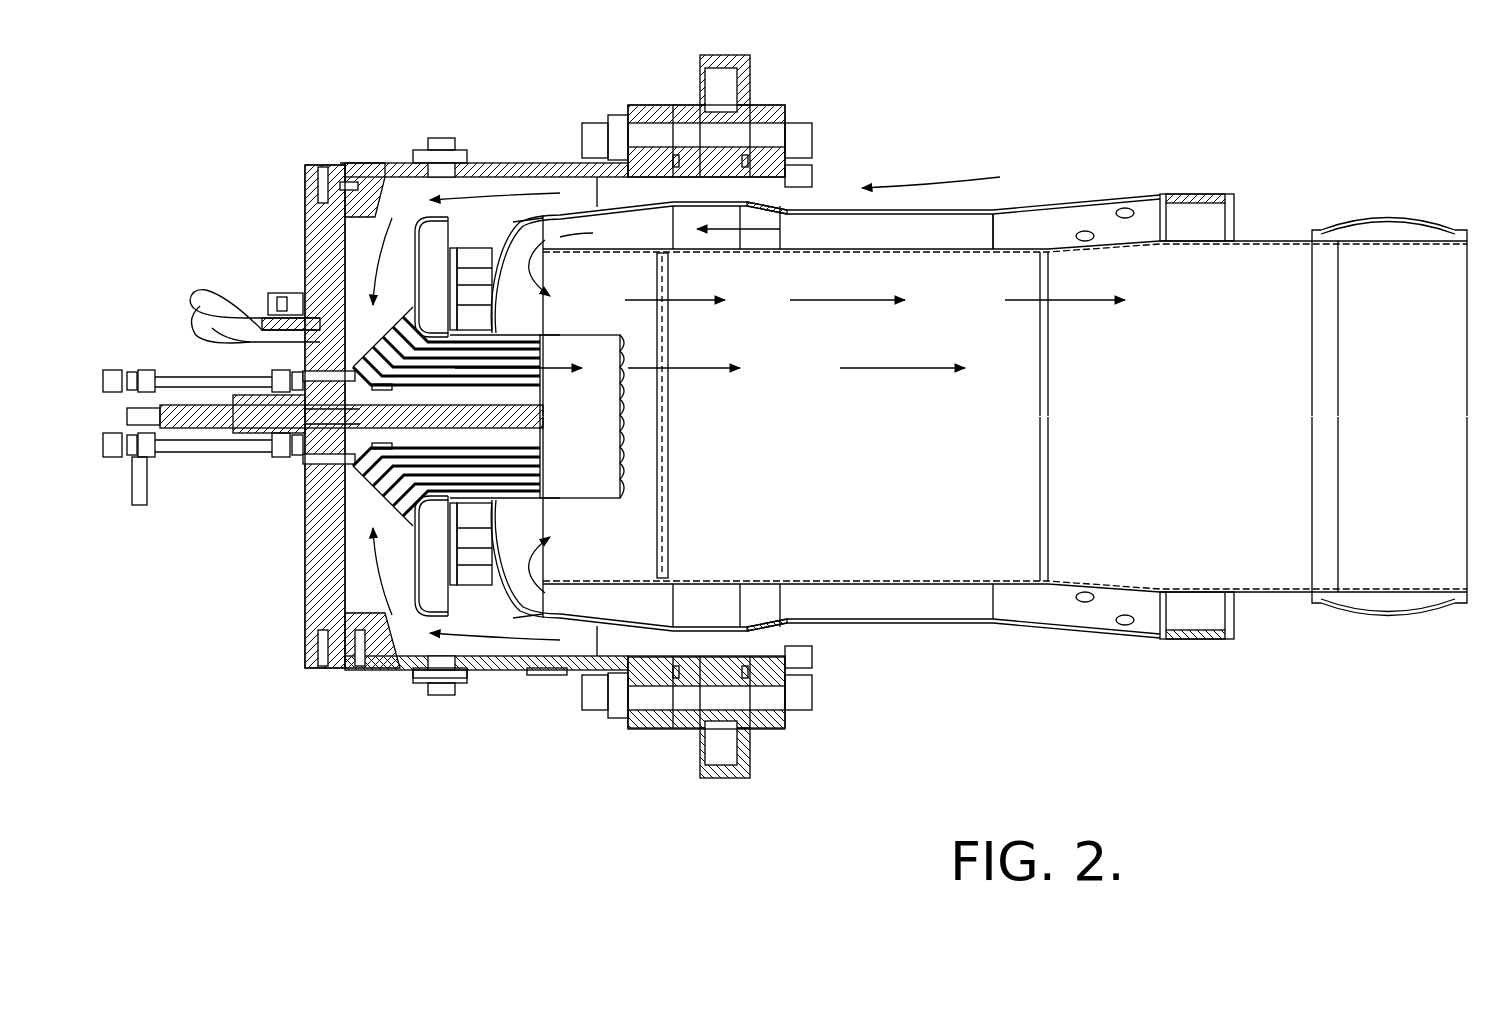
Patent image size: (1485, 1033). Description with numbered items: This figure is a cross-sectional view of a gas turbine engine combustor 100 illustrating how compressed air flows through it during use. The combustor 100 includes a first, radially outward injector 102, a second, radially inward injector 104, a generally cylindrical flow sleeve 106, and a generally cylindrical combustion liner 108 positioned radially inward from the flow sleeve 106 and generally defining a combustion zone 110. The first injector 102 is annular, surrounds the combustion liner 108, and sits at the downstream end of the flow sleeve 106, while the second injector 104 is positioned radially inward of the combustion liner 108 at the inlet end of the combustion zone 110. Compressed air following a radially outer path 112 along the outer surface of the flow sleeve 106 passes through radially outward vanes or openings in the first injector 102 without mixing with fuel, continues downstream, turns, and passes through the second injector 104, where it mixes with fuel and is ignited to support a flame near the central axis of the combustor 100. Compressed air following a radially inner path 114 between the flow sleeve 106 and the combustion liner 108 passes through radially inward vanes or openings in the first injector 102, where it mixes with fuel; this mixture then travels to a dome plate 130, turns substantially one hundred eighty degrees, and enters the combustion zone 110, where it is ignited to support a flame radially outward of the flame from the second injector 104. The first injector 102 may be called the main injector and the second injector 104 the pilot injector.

The combustor 100 is at (296, 140).
The first injector 102 is at (712, 180).
The second injector 104 is at (385, 488).
The flow sleeve 106 is at (1130, 195).
The combustion liner 108 is at (1060, 240).
The combustion zone 110 is at (990, 525).
The radially outer path 112 is at (948, 190).
The radially inner path 114 is at (1268, 222).
The dome plate 130 is at (517, 218).